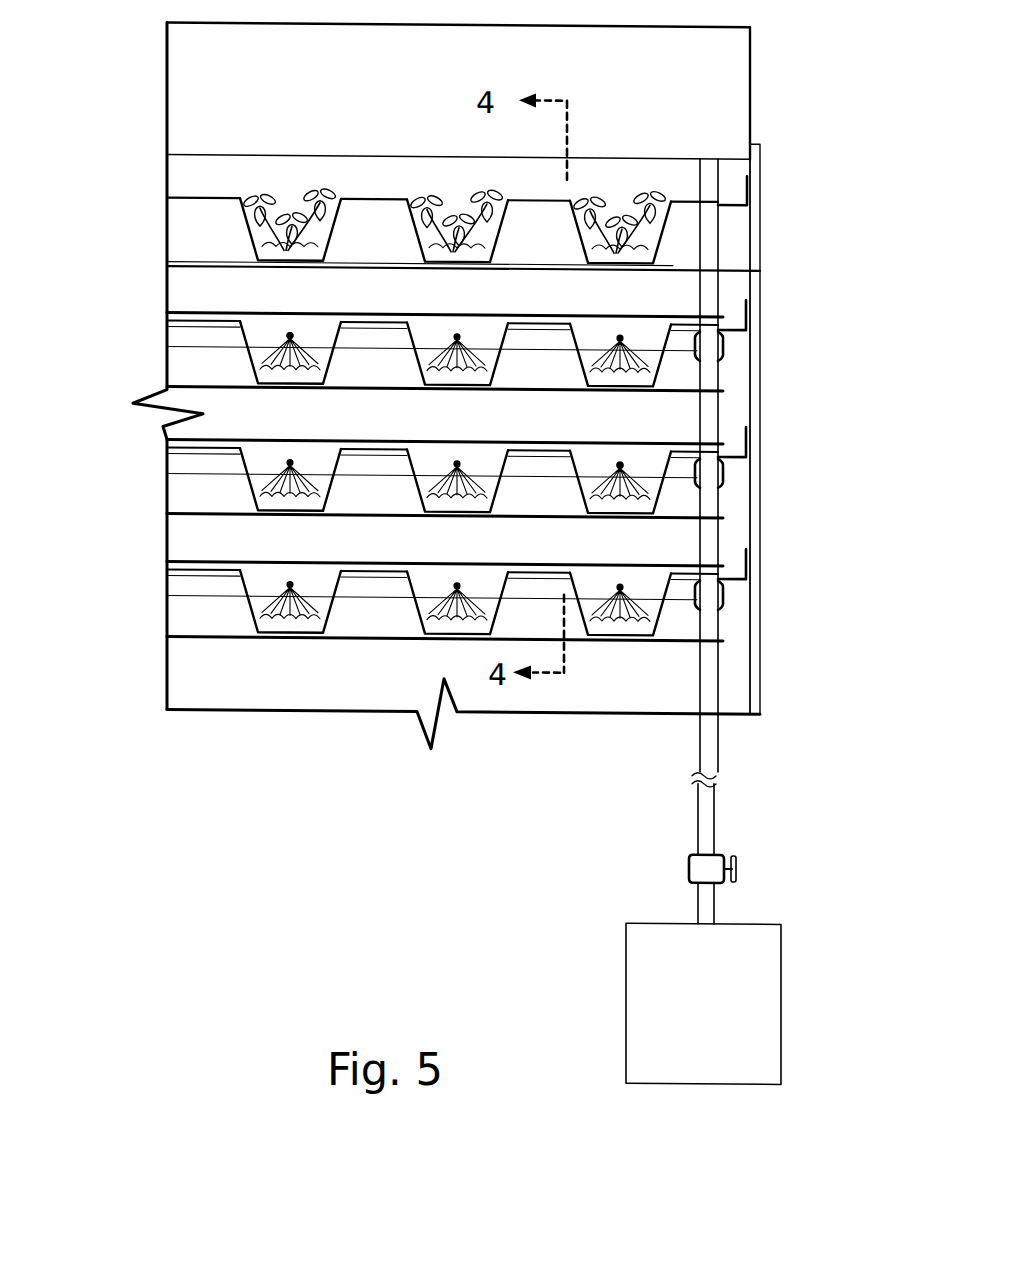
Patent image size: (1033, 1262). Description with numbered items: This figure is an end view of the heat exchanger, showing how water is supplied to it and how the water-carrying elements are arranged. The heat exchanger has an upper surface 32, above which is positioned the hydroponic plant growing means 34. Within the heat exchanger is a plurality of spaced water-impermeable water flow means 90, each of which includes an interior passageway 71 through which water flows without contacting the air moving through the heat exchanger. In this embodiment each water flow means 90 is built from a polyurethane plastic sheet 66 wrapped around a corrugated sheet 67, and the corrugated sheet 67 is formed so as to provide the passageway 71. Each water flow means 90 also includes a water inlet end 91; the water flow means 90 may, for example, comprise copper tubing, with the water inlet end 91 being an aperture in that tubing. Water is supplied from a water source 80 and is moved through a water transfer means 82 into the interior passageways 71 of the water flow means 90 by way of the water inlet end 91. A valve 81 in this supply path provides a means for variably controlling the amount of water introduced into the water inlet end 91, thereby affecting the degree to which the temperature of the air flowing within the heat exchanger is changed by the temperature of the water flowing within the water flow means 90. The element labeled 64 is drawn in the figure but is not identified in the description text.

The upper surface 32 is at (672, 266).
The hydroponic plant growing means 34 is at (690, 172).
The top housing 64 is at (751, 86).
The polyurethane plastic sheet 66 is at (615, 642).
The corrugated sheet 67 is at (660, 612).
The interior passageway 71 is at (272, 625).
The water source 80 is at (782, 980).
The valve 81 is at (738, 862).
The water transfer means 82 is at (712, 740).
The water flow means 90 is at (210, 493).
The water inlet end 91 is at (288, 333).